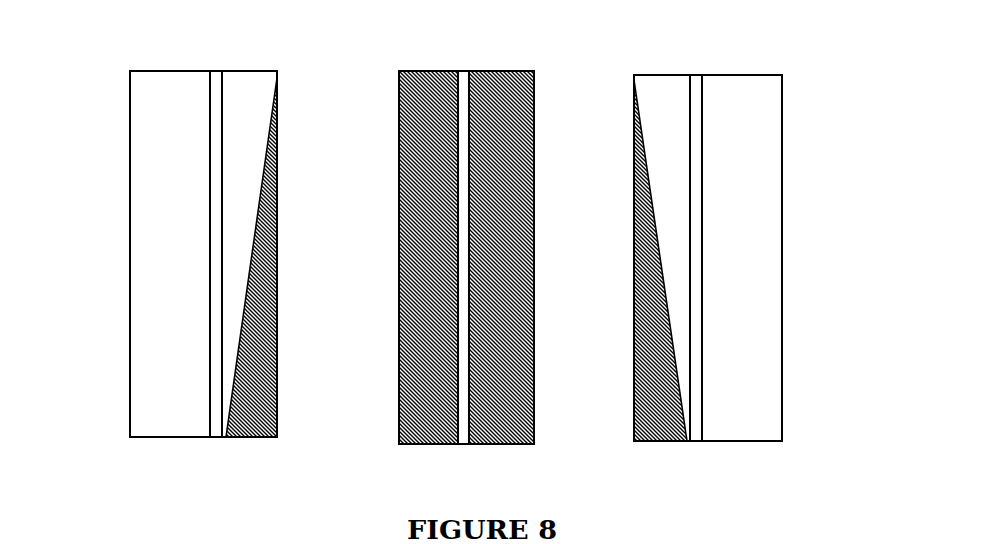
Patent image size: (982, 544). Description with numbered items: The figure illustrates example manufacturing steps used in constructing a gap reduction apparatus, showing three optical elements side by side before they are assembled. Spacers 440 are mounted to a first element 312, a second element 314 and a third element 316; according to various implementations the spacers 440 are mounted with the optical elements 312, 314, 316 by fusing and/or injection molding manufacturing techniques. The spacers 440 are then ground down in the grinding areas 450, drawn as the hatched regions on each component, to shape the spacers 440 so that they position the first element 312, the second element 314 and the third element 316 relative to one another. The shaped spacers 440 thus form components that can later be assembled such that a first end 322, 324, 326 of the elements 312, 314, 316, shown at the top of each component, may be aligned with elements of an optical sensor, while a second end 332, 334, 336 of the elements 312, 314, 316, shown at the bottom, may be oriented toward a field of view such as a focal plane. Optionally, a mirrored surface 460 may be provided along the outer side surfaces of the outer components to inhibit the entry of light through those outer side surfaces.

The first element 312 is at (217, 274).
The second element 314 is at (462, 150).
The third element 316 is at (692, 135).
The first end 322 is at (213, 70).
The first end 324 is at (463, 70).
The first end 326 is at (697, 73).
The second end 332 is at (215, 442).
The second end 334 is at (463, 447).
The second end 336 is at (697, 444).
The spacer 440 is at (170, 107).
The grinding area 450 is at (410, 209).
The mirrored surface 460 is at (130, 357).